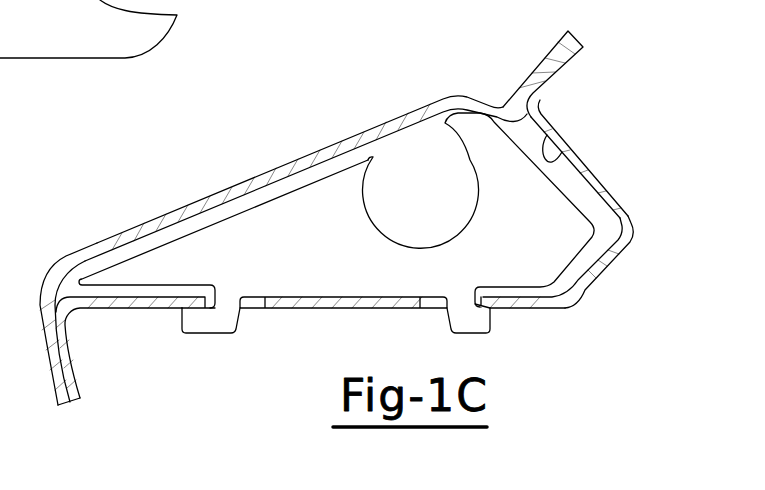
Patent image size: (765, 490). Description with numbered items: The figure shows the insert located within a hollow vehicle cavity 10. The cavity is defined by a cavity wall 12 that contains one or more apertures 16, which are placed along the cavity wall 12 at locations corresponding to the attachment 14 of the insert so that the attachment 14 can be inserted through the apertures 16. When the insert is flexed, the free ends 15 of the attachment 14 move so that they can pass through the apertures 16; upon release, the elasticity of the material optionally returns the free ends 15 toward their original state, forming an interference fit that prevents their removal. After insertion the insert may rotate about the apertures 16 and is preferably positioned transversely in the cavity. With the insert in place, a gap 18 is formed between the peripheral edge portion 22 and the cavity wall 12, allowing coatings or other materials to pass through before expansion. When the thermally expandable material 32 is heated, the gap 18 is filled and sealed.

The hollow vehicle cavity 10 is at (403, 158).
The cavity wall 12 is at (570, 162).
The attachment 14 is at (215, 333).
The free ends 15 is at (175, 322).
The apertures 16 is at (430, 306).
The gap 18 is at (583, 200).
The peripheral edge portion 22 is at (622, 232).
The thermally expandable material 32 is at (143, 268).